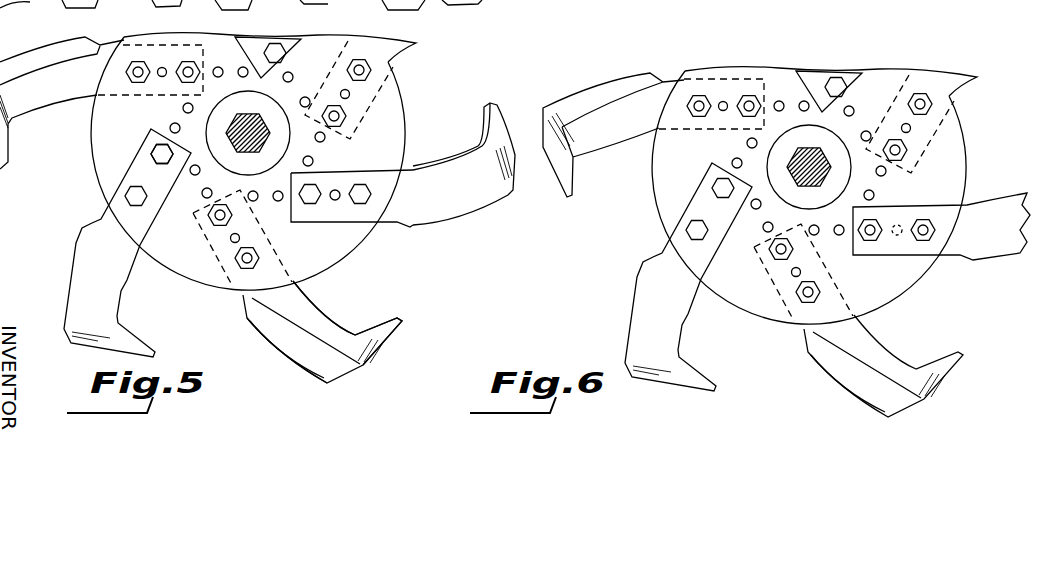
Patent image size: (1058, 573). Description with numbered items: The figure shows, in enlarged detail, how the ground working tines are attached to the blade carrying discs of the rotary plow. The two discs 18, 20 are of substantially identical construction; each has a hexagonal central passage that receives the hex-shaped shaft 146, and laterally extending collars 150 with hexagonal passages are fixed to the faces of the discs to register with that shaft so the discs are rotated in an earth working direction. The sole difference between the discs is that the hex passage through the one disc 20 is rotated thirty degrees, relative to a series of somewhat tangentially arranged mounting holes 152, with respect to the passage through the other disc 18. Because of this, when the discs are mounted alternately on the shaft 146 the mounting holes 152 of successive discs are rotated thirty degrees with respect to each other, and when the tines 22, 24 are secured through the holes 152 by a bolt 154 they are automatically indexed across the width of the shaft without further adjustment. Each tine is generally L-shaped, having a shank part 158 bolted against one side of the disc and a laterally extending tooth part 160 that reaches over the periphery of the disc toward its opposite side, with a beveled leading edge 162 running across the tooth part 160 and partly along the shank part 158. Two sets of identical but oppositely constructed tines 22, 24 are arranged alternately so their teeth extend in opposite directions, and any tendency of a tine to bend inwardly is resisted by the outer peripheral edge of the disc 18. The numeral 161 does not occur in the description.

In FIG. 5, the disc 18 is at (260, 162).
In FIG. 6, the disc 20 is at (818, 196).
In FIG. 5, the tine 22 is at (114, 243).
In FIG. 6, the tine 22 is at (674, 277).
In FIG. 5, the tine 24 is at (322, 332).
In FIG. 6, the tine 24 is at (883, 366).
In FIG. 5, the hex-shaped shaft 146 is at (248, 153).
In FIG. 6, the hex-shaped shaft 146 is at (812, 149).
In FIG. 5, the collar 150 is at (254, 130).
In FIG. 6, the collar 150 is at (809, 161).
In FIG. 5, the mounting holes 152 is at (165, 118).
In FIG. 6, the mounting holes 152 is at (732, 153).
In FIG. 5, the bolt 154 is at (139, 148).
In FIG. 5, the shank part 158 is at (324, 308).
In FIG. 5, the tooth part 160 is at (393, 341).
In FIG. 5, the blade trailing edge 161 is at (278, 350).
In FIG. 5, the beveled leading edge 162 is at (332, 0).